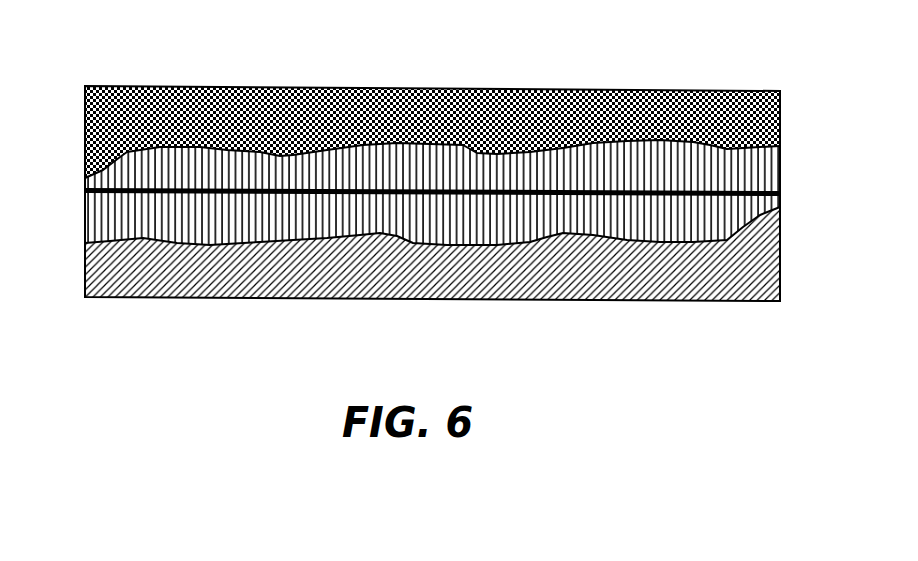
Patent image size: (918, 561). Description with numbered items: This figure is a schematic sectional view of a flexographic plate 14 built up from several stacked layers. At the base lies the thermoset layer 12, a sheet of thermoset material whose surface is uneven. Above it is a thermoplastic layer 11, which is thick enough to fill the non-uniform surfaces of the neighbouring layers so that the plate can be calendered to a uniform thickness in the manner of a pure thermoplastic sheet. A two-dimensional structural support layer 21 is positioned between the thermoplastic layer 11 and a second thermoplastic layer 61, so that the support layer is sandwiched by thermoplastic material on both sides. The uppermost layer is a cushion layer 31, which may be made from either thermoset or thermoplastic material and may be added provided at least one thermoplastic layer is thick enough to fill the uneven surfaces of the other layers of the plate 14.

The flexographic plate 14 is at (223, 405).
The cushion layer 31 is at (148, 86).
The thermoplastic layer 61 is at (780, 170).
The thermoplastic layer 11 is at (85, 218).
The two-dimensional structural support layer 21 is at (780, 196).
The thermoset layer 12 is at (620, 300).